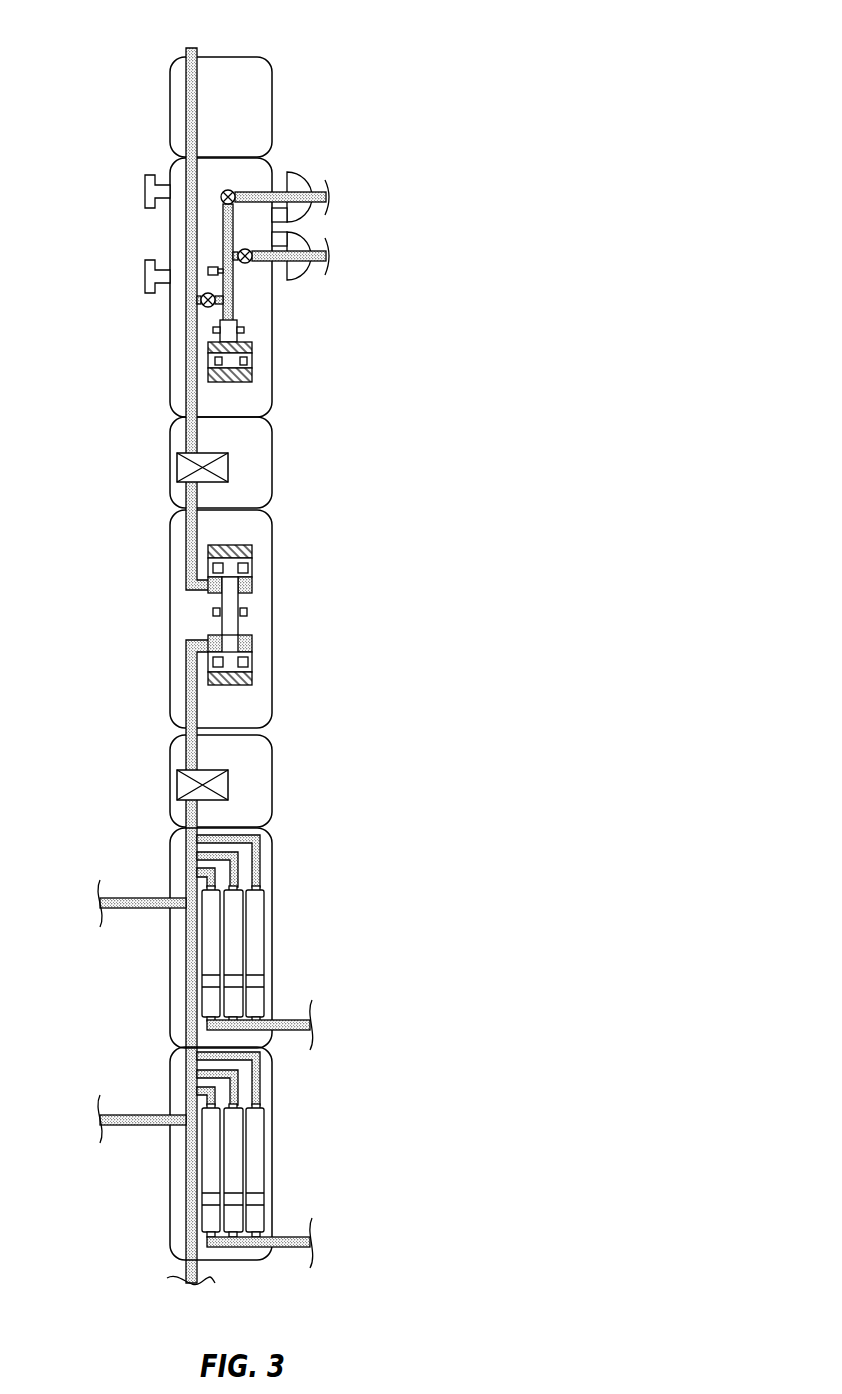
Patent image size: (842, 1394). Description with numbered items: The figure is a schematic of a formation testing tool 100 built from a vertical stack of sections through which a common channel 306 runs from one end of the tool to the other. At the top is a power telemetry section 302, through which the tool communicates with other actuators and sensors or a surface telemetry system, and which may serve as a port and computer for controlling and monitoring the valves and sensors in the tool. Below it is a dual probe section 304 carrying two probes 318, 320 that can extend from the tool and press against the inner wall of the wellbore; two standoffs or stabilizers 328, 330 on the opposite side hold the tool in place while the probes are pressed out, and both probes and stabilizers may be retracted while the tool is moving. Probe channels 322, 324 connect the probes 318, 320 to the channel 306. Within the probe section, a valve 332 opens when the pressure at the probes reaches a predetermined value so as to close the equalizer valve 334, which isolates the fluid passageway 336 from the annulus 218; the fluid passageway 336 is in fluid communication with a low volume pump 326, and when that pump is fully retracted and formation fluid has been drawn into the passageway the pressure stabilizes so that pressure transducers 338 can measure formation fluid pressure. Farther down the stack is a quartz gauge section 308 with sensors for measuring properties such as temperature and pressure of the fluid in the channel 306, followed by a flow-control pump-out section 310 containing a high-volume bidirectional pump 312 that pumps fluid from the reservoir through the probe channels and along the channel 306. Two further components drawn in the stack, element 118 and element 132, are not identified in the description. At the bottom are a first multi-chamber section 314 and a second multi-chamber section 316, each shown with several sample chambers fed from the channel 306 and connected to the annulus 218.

The formation testing tool 100 is at (362, 50).
The valve 118 is at (176, 780).
The valve housing section 132 is at (228, 785).
The annulus 218 is at (408, 992).
The power telemetry section 302 is at (170, 107).
The dual probe section 304 is at (170, 350).
The channel 306 is at (172, 398).
The quartz gauge section 308 is at (174, 458).
The flow-control pump-out section 310 is at (170, 692).
The high-volume bidirectional pump 312 is at (212, 612).
The first multi-chamber section 314 is at (170, 853).
The second multi-chamber section 316 is at (170, 1068).
The probe 318 is at (304, 181).
The probe 320 is at (305, 239).
The probe channel 322 is at (272, 172).
The probe channel 324 is at (265, 263).
The low volume pump 326 is at (255, 358).
The stabilizer 328 is at (143, 190).
The stabilizer 330 is at (143, 277).
The valve 332 is at (228, 190).
The equalizer valve 334 is at (208, 307).
The fluid passageway 336 is at (223, 237).
The pressure transducer 338 is at (212, 266).